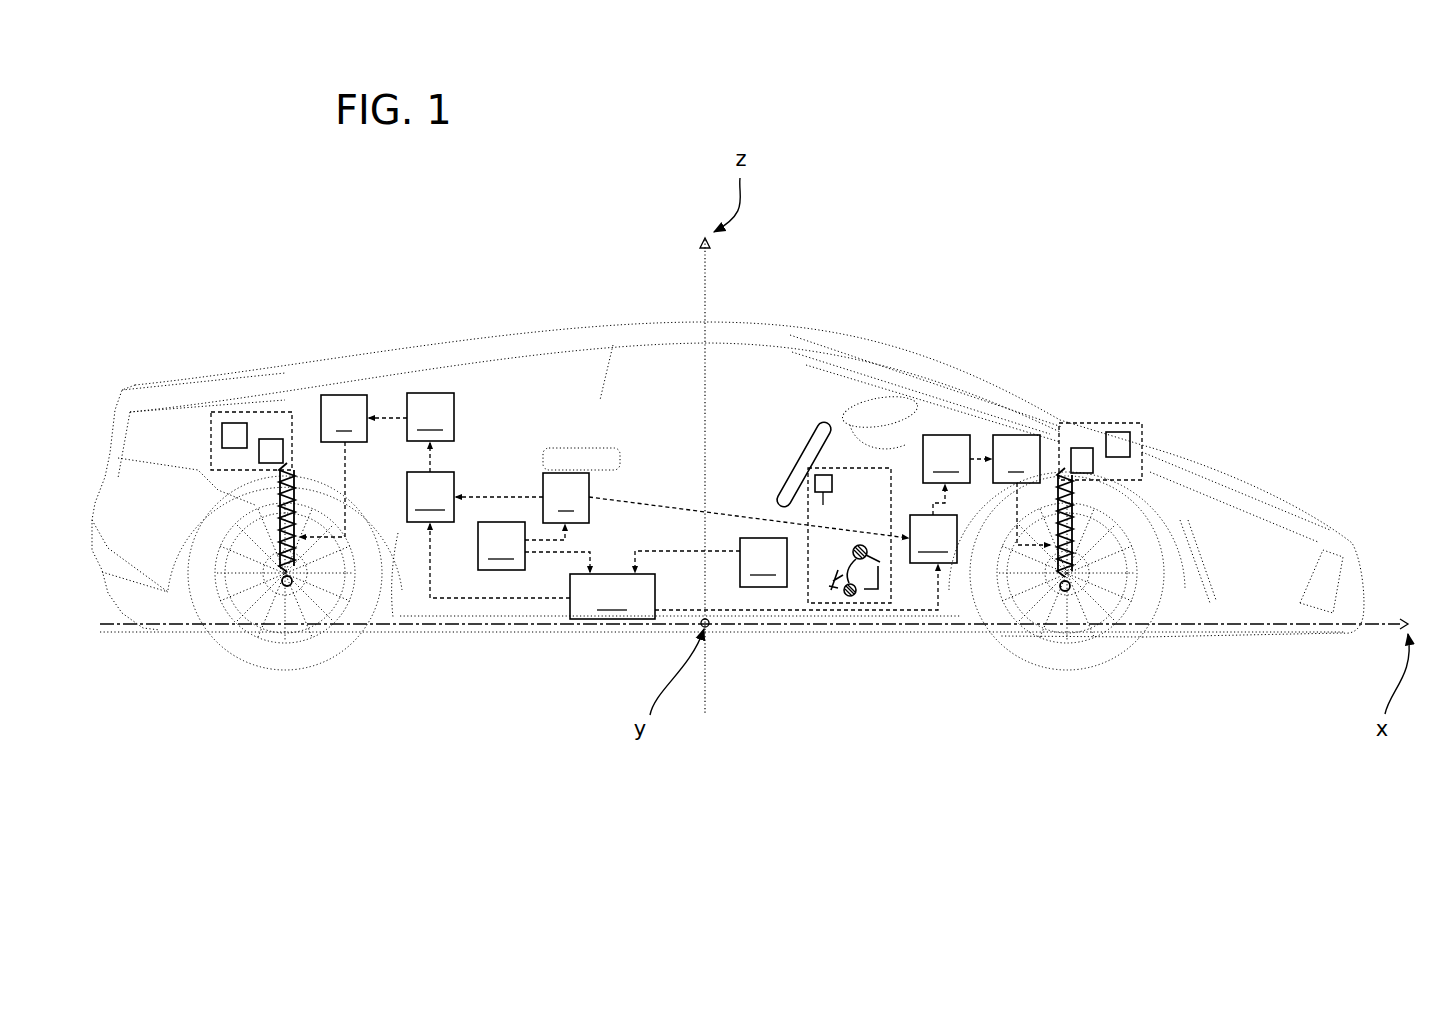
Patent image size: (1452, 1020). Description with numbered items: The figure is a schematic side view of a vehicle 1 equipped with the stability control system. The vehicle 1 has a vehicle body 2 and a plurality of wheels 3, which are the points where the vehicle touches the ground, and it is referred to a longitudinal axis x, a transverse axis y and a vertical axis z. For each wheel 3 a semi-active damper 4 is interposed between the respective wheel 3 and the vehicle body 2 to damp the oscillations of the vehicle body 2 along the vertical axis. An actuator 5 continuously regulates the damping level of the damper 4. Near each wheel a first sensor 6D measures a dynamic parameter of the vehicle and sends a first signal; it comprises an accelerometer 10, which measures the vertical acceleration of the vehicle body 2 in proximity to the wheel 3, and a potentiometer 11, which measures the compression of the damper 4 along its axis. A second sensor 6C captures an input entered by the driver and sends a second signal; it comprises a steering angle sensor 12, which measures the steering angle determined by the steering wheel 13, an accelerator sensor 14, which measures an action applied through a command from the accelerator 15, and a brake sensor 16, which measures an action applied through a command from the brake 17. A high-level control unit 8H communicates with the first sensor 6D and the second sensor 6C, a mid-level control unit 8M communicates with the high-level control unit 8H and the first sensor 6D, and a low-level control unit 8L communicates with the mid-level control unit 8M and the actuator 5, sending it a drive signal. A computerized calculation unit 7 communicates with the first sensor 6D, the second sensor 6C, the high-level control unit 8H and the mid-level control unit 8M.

The vehicle 1 is at (1063, 248).
The vehicle body 2 is at (165, 383).
The wheels 3 is at (233, 660).
The semi-active damper 4 is at (297, 576).
The actuator 5 is at (675, 470).
The second sensor 6C is at (865, 612).
The first sensor 6D is at (291, 410).
The computerized calculation unit 7 is at (682, 505).
The high-level control unit 8H is at (684, 571).
The low-level control unit 8L is at (680, 438).
The mid-level control unit 8M is at (682, 503).
The accelerometer 10 is at (233, 420).
The potentiometer 11 is at (272, 437).
The steering angle sensor 12 is at (843, 472).
The steering wheel 13 is at (829, 419).
The accelerator sensor 14 is at (848, 598).
The accelerator 15 is at (885, 572).
The brake sensor 16 is at (882, 558).
The brake 17 is at (832, 592).